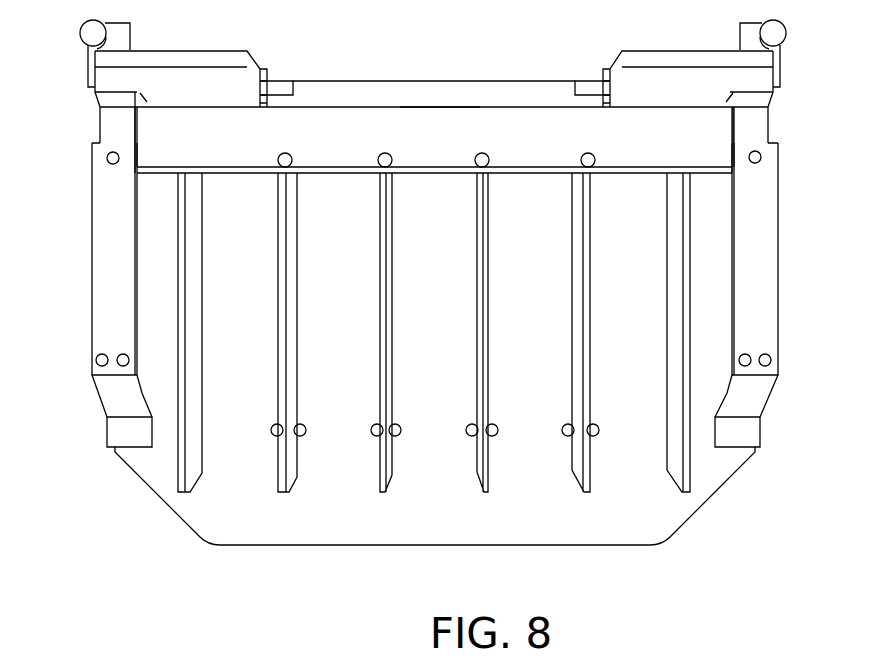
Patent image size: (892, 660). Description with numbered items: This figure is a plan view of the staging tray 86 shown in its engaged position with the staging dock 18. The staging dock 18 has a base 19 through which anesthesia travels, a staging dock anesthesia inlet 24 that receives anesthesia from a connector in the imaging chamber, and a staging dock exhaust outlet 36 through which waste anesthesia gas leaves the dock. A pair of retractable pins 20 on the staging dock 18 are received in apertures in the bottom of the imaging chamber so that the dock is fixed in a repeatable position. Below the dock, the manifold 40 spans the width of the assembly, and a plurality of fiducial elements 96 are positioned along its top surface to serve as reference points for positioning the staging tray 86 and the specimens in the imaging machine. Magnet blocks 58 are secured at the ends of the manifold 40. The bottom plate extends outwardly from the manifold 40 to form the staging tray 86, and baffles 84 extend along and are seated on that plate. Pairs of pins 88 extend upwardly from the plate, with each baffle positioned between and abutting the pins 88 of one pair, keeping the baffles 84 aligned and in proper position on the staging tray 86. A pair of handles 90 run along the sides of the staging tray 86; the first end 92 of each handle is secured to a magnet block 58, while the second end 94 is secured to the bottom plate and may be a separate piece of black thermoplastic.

The staging dock 18 is at (389, 81).
The base 19 is at (440, 92).
The retractable pins 20 is at (80, 33).
The staging dock anesthesia inlet 24 is at (276, 86).
The staging dock exhaust outlet 36 is at (588, 82).
The manifold 40 is at (626, 159).
The magnet blocks 58 is at (110, 127).
The baffles 84 is at (382, 306).
The staging tray 86 is at (667, 559).
The pins 88 is at (272, 438).
The handles 90 is at (100, 290).
The first end 92 is at (120, 156).
The second end 94 is at (115, 431).
The fiducial elements 96 is at (379, 155).